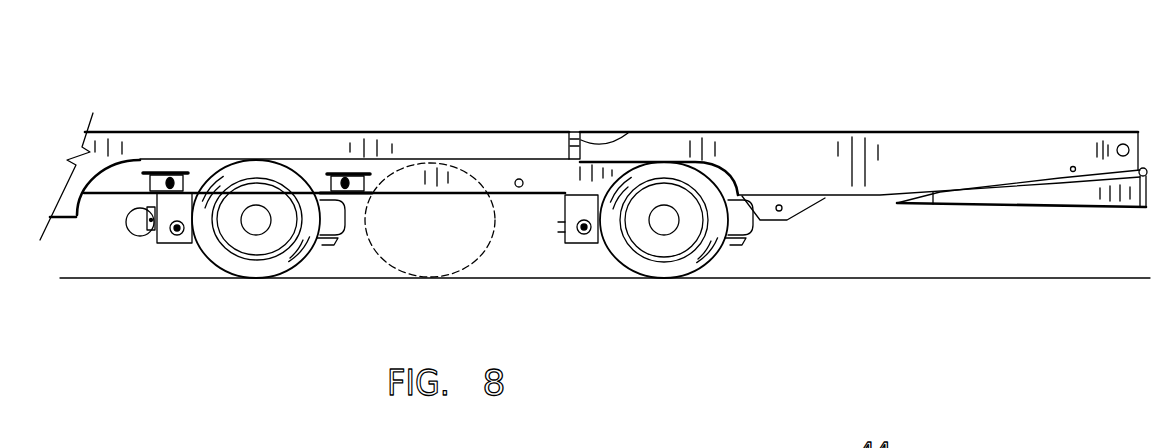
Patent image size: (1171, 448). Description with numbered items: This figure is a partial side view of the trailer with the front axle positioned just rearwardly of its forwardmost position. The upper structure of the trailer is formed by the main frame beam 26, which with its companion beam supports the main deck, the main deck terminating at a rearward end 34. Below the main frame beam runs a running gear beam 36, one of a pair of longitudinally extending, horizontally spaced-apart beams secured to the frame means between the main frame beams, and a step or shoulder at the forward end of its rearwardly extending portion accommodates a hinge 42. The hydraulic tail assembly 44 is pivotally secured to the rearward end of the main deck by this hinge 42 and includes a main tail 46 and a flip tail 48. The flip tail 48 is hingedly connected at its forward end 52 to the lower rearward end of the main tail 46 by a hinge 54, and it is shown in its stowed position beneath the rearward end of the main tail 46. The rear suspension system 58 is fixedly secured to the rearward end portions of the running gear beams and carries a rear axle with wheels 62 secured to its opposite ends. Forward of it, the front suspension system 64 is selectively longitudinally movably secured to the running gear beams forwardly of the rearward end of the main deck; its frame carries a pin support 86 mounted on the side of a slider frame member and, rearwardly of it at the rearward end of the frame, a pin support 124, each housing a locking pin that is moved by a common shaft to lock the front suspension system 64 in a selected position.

The main frame beam 26 is at (427, 132).
The rearward end 34 is at (571, 131).
The running gear beam 36 is at (503, 185).
The hinge 42 is at (628, 133).
The hydraulic tail assembly 44 is at (855, 118).
The main tail 46 is at (999, 131).
The flip tail 48 is at (1006, 212).
The forward end 52 is at (1147, 200).
The hinge 54 is at (1146, 166).
The rear suspension system 58 is at (680, 274).
The wheels 62 is at (647, 273).
The front suspension system 64 is at (275, 275).
The pin support 86 is at (178, 172).
The pin support 124 is at (350, 173).